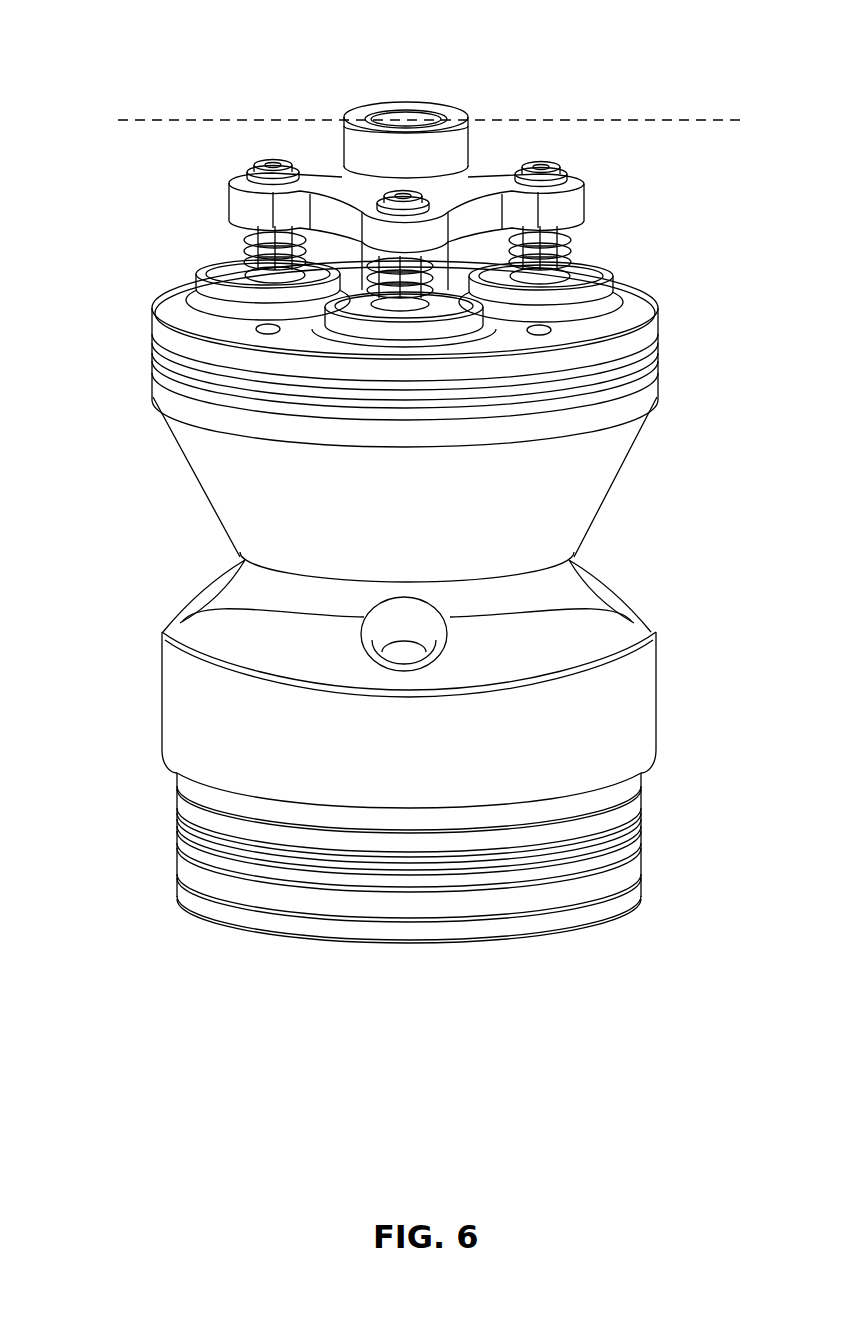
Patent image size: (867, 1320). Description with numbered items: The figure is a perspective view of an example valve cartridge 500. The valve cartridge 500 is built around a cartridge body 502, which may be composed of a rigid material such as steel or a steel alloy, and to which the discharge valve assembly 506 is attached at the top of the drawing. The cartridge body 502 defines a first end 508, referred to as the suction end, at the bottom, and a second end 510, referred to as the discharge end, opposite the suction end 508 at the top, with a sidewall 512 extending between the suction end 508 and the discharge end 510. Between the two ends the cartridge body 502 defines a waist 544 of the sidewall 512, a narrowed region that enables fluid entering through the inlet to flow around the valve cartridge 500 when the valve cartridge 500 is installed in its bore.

The valve cartridge 500 is at (158, 26).
The discharge valve assembly 506 is at (215, 180).
The second end 510 is at (642, 300).
The cartridge body 502 is at (155, 388).
The sidewall 512 is at (232, 488).
The waist 544 is at (587, 550).
The first end 508 is at (433, 947).